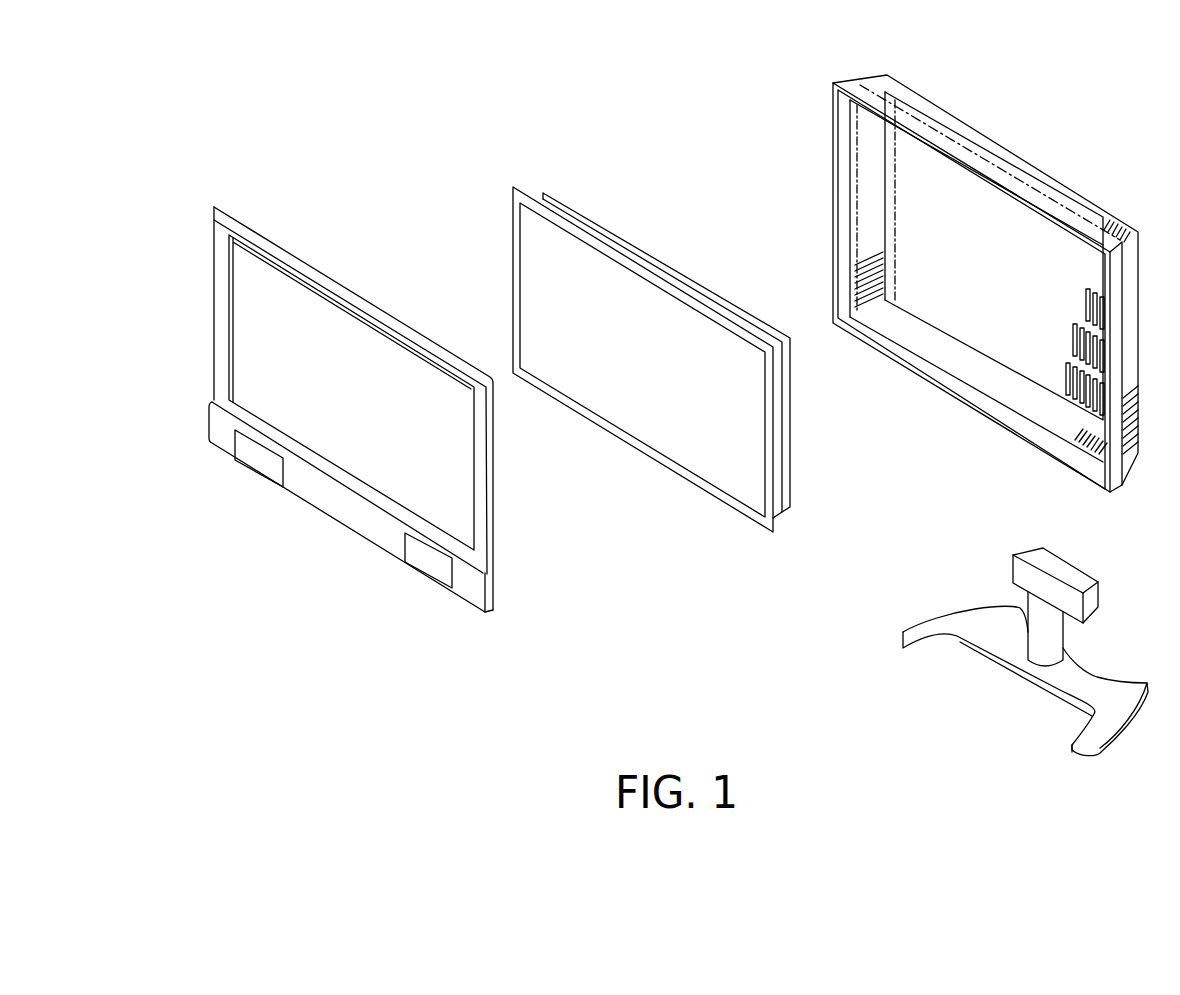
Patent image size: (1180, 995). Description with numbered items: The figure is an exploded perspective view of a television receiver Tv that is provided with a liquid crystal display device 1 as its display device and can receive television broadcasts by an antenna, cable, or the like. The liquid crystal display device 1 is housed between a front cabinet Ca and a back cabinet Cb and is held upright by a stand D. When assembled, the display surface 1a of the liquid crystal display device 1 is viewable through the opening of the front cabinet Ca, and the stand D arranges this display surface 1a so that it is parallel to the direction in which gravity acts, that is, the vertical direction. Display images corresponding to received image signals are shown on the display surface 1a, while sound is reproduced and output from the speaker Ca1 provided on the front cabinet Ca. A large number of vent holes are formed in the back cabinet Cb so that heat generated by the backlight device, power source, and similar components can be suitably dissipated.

The television receiver Tv is at (563, 110).
The front cabinet Ca is at (488, 520).
The speaker Ca1 is at (262, 462).
The liquid crystal display device 1 is at (668, 472).
The display surface 1a is at (638, 407).
The back cabinet Cb is at (1008, 160).
The stand D is at (1095, 677).